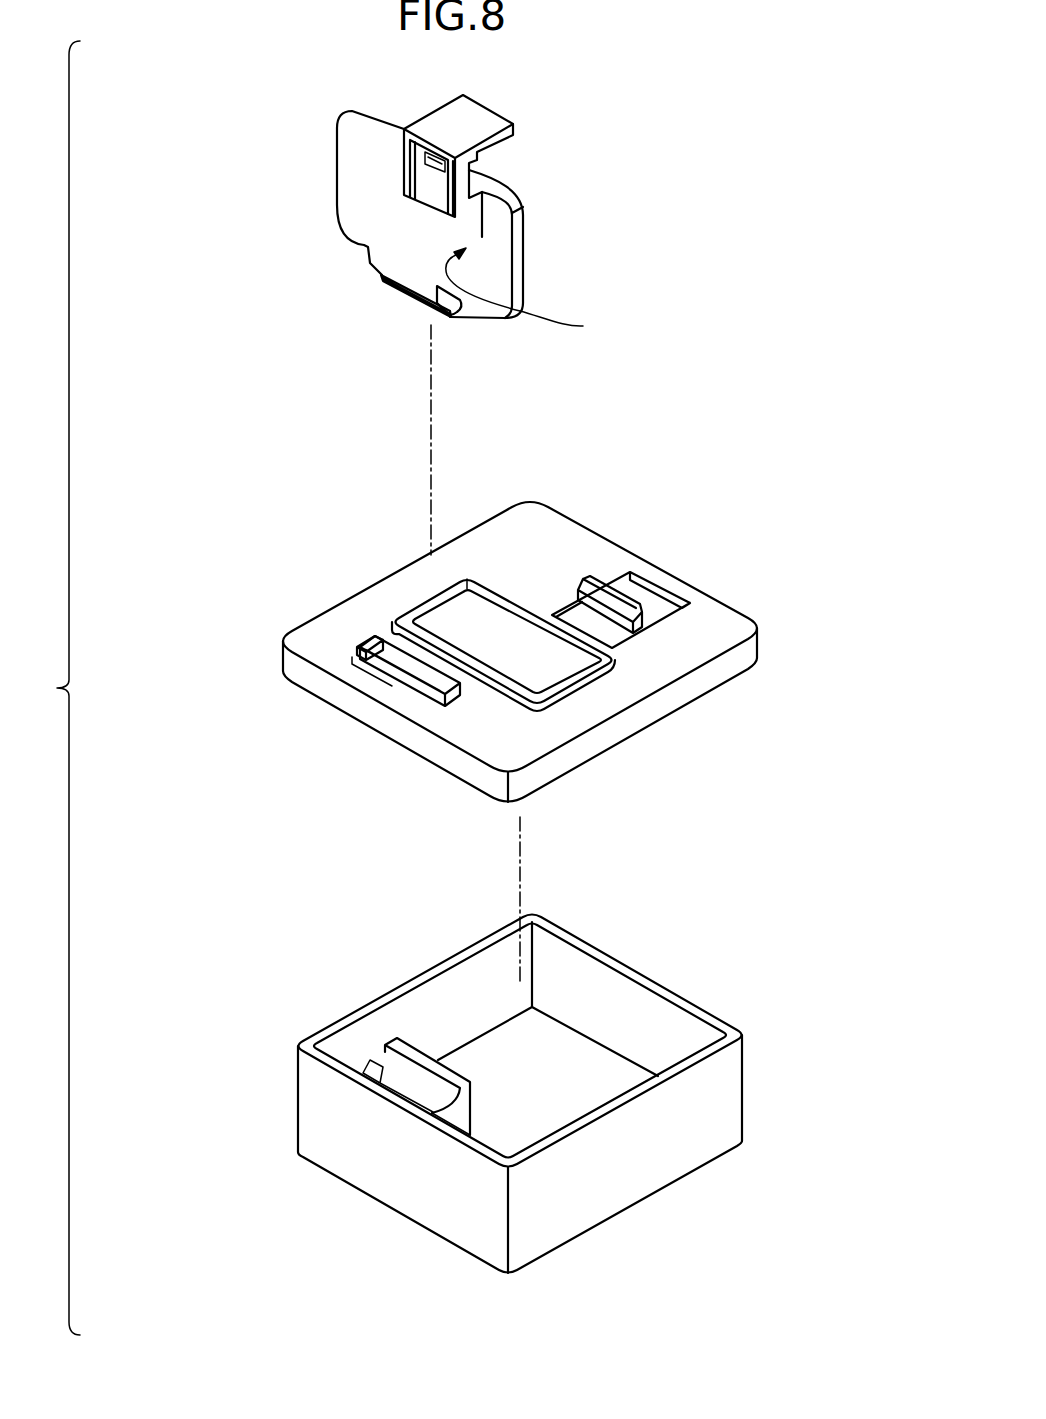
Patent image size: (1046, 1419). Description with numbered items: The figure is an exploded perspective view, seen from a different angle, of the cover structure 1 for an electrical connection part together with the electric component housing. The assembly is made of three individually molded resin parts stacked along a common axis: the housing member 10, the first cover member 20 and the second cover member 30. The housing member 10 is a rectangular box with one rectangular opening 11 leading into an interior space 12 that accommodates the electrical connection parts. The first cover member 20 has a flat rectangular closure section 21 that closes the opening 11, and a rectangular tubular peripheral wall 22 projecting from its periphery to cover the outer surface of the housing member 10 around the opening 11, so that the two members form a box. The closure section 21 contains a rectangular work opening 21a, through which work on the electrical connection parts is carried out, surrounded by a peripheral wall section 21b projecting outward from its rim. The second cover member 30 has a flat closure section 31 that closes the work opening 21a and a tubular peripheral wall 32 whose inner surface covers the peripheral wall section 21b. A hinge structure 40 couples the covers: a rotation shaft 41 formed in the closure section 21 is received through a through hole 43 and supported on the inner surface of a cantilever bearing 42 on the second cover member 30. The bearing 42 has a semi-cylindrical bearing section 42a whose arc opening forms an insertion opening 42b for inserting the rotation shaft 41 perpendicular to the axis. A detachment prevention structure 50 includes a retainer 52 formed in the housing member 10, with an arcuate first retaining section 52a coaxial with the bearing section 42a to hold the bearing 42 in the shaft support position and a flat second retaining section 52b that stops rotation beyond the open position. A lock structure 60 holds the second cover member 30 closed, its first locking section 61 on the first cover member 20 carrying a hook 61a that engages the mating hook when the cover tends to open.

The cover structure 1 is at (51, 688).
The housing member 10 is at (303, 932).
The opening 11 is at (675, 1013).
The interior space 12 is at (603, 1028).
The first cover member 20 is at (221, 551).
The closure section 21 is at (316, 628).
The work opening 21a is at (493, 598).
The peripheral wall section 21b is at (541, 605).
The peripheral wall 22 is at (443, 765).
The second cover member 30 is at (284, 149).
The closure section 31 is at (528, 293).
The peripheral wall 32 is at (528, 264).
The hinge structure 40 is at (386, 248).
The rotation shaft 41 is at (398, 672).
The bearing 42 is at (352, 293).
The bearing section 42a is at (418, 303).
The insertion opening 42b is at (440, 317).
The through hole 43 is at (387, 640).
The detachment prevention structure 50 is at (334, 1126).
The retainer 52 is at (334, 1126).
The first retaining section 52a is at (403, 1067).
The second retaining section 52b is at (413, 1093).
The lock structure 60 is at (726, 657).
The first locking section 61 is at (726, 657).
The hook 61a is at (636, 626).